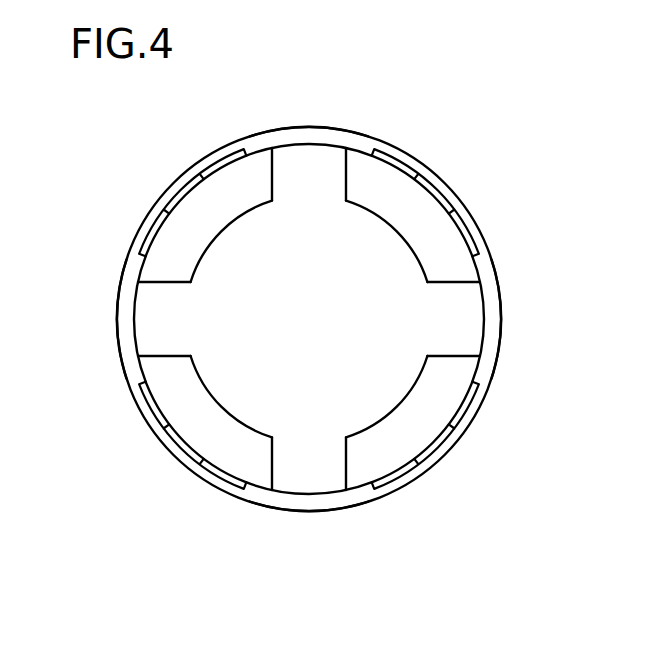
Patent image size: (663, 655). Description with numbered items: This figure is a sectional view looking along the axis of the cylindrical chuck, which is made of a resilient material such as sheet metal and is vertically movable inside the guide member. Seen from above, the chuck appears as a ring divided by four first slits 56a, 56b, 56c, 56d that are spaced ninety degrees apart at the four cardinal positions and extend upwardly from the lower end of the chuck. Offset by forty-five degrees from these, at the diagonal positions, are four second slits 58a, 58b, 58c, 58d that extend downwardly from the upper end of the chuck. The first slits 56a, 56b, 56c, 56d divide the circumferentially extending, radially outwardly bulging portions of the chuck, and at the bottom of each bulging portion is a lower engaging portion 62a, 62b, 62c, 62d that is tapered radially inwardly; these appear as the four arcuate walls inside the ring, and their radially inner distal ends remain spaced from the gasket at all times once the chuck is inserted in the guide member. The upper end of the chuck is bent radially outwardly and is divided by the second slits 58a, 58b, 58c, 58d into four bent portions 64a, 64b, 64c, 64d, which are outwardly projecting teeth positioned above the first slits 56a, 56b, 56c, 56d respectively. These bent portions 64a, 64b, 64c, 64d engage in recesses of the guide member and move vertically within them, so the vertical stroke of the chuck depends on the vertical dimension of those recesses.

The first slit 56a is at (152, 322).
The first slit 56b is at (308, 170).
The first slit 56c is at (468, 320).
The first slit 56d is at (320, 478).
The second slit 58a is at (182, 188).
The second slit 58b is at (437, 183).
The second slit 58c is at (443, 450).
The second slit 58d is at (168, 455).
The lower engaging portion 62a is at (213, 220).
The lower engaging portion 62b is at (412, 235).
The lower engaging portion 62c is at (408, 417).
The lower engaging portion 62d is at (203, 417).
The bent portion 64a is at (115, 277).
The bent portion 64b is at (341, 130).
The bent portion 64c is at (493, 345).
The bent portion 64d is at (280, 507).